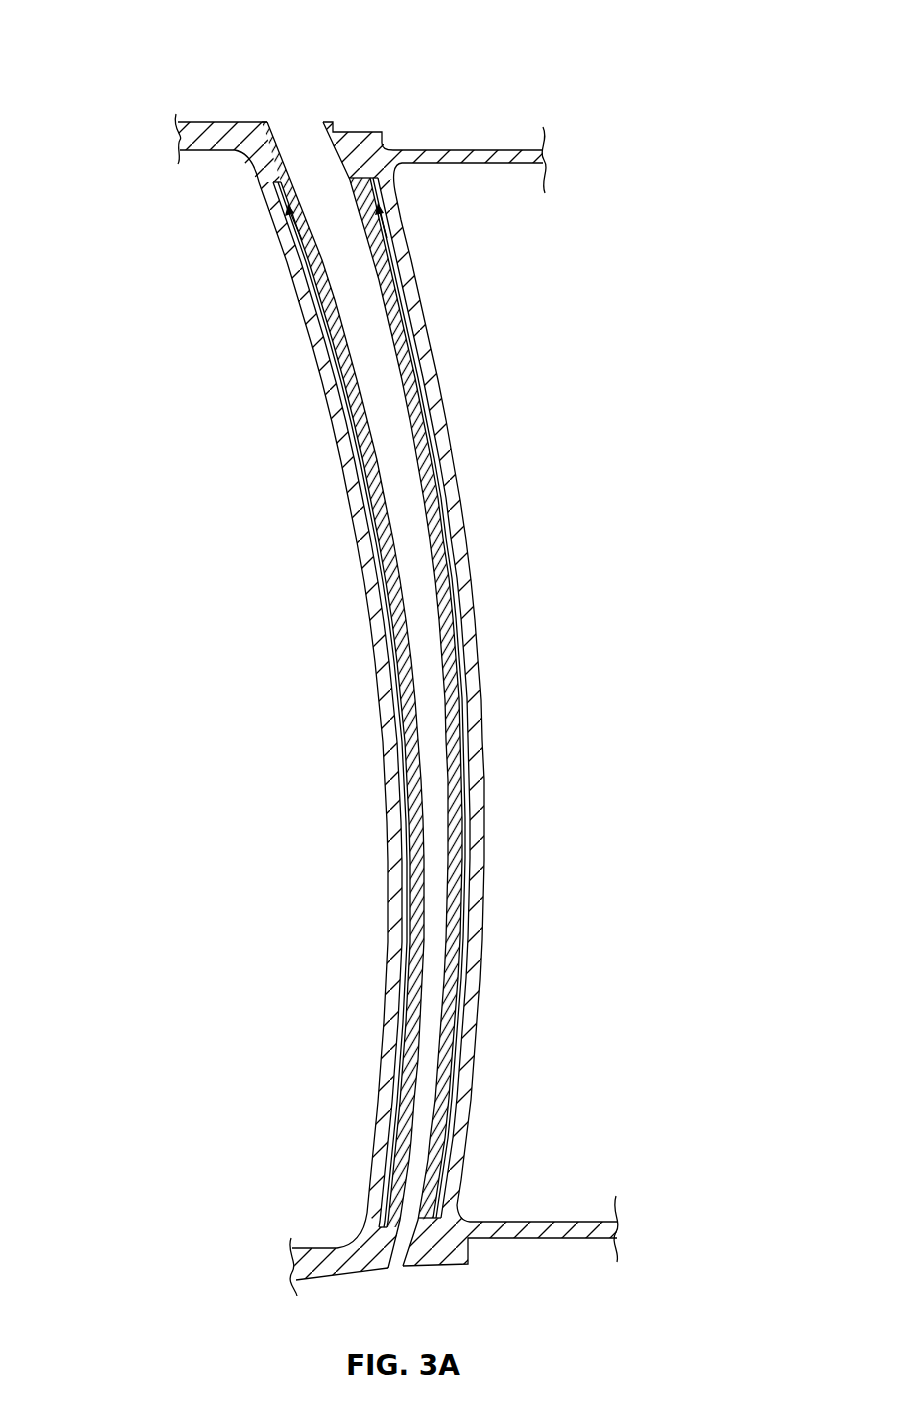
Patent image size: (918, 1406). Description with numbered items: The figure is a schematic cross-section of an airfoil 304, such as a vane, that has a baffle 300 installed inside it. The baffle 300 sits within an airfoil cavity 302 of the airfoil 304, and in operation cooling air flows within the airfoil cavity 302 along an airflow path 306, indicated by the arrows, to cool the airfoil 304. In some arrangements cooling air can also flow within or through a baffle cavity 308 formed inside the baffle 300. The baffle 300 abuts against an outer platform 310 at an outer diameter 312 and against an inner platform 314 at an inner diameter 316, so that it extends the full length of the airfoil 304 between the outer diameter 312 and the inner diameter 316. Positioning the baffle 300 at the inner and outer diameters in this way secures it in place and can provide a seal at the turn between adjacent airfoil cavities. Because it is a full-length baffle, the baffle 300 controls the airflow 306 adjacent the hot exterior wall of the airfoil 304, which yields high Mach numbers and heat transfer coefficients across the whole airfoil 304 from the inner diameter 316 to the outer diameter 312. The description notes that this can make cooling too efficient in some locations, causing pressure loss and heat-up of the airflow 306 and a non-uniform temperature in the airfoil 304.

The baffle 300 is at (277, 131).
The airfoil cavity 302 is at (364, 1194).
The airfoil 304 is at (344, 505).
The airflow path 306 is at (322, 304).
The baffle cavity 308 is at (418, 629).
The outer platform 310 is at (368, 140).
The outer diameter 312 is at (130, 40).
The inner platform 314 is at (447, 1252).
The inner diameter 316 is at (265, 1268).